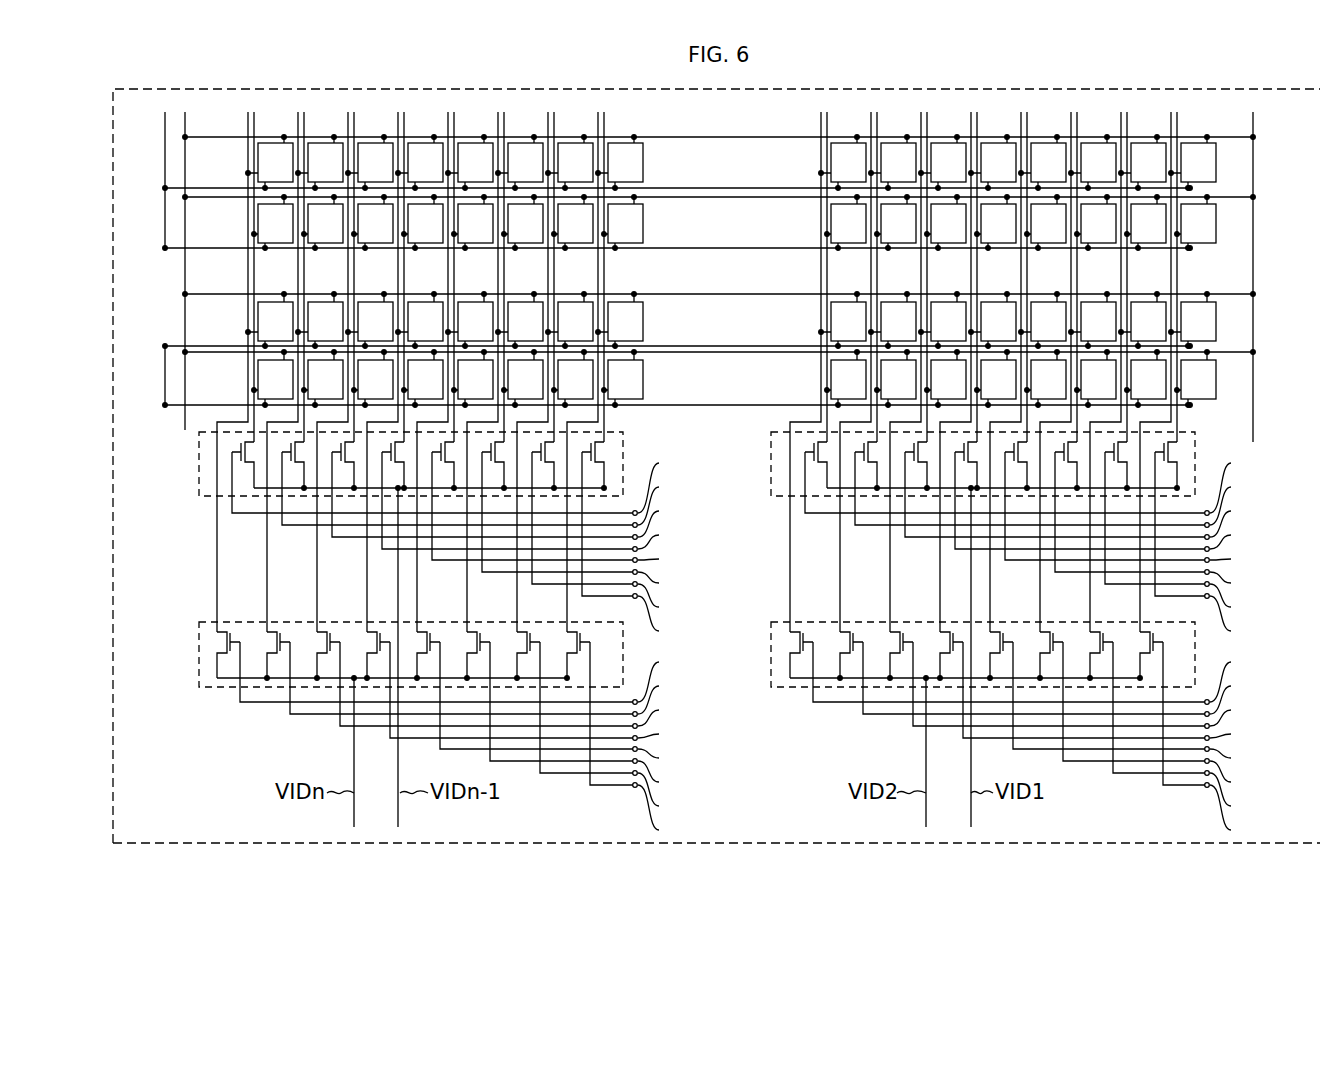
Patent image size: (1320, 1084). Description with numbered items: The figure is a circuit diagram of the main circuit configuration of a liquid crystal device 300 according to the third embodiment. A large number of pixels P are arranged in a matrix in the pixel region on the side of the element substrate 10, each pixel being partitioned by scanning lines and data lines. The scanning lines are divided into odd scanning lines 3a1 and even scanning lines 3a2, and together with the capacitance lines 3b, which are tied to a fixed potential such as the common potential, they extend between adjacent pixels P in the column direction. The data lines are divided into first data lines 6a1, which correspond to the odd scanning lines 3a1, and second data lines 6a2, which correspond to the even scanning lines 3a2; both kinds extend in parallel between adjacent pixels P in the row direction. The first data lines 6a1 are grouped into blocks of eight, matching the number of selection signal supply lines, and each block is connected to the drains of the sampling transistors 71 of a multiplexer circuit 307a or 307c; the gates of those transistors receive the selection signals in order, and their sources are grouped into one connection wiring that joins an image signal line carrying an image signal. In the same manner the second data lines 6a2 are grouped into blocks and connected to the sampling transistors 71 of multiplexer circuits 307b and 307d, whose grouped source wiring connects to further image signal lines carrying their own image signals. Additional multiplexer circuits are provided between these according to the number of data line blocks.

The liquid crystal device 300 is at (1251, 84).
The element substrate 10 is at (933, 88).
The odd scanning lines 3a1 is at (218, 247).
The even scanning lines 3a2 is at (218, 187).
The capacitance lines 3b is at (790, 297).
The pixels P is at (283, 137).
The first data lines 6a1 is at (246, 426).
The second data lines 6a2 is at (217, 549).
The sampling transistor 71 is at (606, 453).
The multiplexer circuit 307a is at (199, 472).
The multiplexer circuit 307b is at (199, 655).
The multiplexer circuit 307c is at (771, 432).
The multiplexer circuit 307d is at (794, 688).